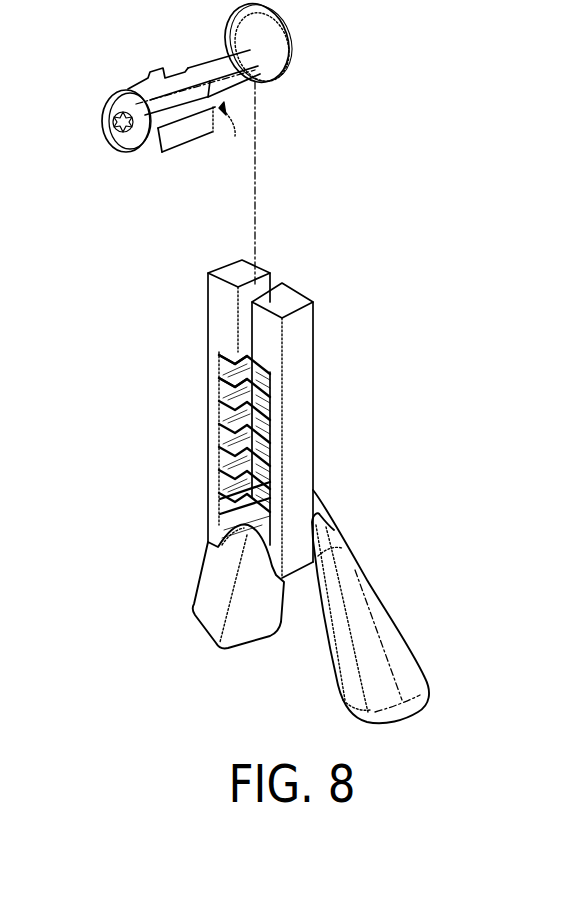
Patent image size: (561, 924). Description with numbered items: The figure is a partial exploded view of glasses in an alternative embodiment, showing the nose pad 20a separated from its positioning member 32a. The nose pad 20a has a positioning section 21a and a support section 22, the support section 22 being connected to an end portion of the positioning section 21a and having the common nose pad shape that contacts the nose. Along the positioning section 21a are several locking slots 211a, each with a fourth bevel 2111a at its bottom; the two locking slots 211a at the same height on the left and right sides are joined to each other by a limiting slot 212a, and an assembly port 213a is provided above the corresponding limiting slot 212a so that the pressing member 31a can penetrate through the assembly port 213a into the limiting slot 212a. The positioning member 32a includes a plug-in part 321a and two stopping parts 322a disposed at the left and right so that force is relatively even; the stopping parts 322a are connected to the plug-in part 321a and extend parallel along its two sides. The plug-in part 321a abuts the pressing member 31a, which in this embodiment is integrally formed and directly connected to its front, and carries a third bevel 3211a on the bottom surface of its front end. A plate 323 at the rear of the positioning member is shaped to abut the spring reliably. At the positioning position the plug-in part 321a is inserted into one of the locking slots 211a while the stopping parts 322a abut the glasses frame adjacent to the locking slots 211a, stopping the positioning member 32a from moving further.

The nose pad 20a is at (306, 491).
The positioning section 21a is at (289, 387).
The locking slots 211a is at (194, 444).
The fourth bevel 2111a is at (224, 361).
The limiting slot 212a is at (224, 391).
The assembly port 213a is at (233, 320).
The support section 22 is at (374, 606).
The pressing member 31a is at (213, 70).
The positioning member 32a is at (148, 138).
The plug-in part 321a is at (96, 150).
The stopping parts 322a is at (146, 78).
The third bevel 3211a is at (220, 144).
The plate 323 is at (113, 124).